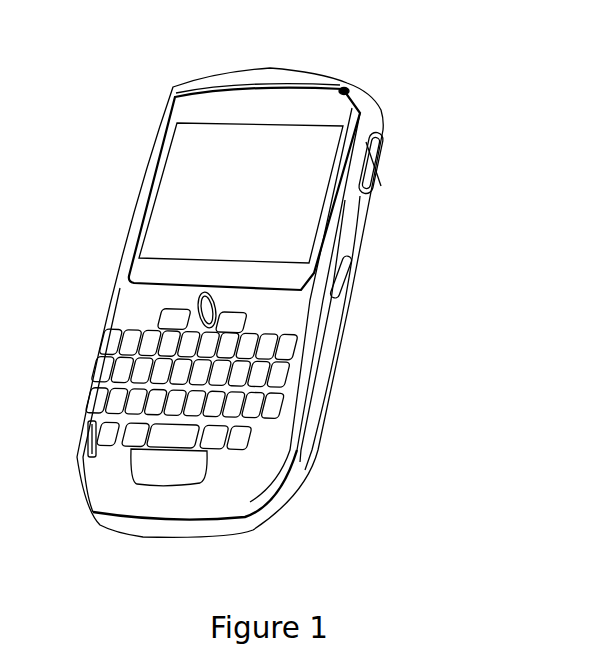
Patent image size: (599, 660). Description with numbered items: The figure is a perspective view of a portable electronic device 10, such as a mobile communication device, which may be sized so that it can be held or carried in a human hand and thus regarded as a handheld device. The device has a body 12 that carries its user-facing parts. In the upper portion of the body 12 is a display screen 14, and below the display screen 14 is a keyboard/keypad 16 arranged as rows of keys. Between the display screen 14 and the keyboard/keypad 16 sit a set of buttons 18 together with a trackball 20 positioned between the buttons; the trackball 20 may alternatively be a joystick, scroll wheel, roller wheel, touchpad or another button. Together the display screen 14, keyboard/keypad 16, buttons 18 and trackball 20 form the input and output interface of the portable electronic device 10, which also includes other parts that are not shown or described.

The portable electronic device 10 is at (373, 35).
The body 12 is at (372, 114).
The display screen 14 is at (270, 197).
The keyboard/keypad 16 is at (247, 412).
The set of buttons 18 is at (163, 316).
The trackball 20 is at (218, 302).